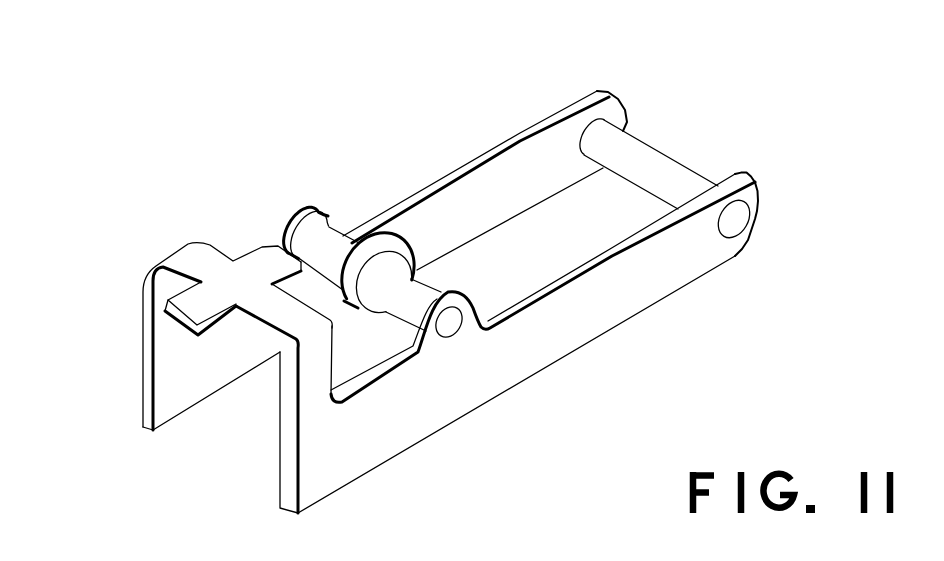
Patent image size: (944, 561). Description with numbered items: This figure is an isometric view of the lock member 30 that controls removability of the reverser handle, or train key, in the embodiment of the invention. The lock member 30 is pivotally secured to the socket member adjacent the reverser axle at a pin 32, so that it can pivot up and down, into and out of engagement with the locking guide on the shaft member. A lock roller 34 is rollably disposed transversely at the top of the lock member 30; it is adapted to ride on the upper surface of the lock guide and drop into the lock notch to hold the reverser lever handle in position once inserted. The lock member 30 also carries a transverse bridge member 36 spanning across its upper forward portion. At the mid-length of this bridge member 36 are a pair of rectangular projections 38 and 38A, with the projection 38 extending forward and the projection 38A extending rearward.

The lock member 30 is at (459, 146).
The pin 32 is at (651, 158).
The lock roller 34 is at (377, 246).
The transverse bridge member 36 is at (205, 258).
The rectangular projection 38 is at (194, 305).
The rectangular projection 38A is at (263, 250).